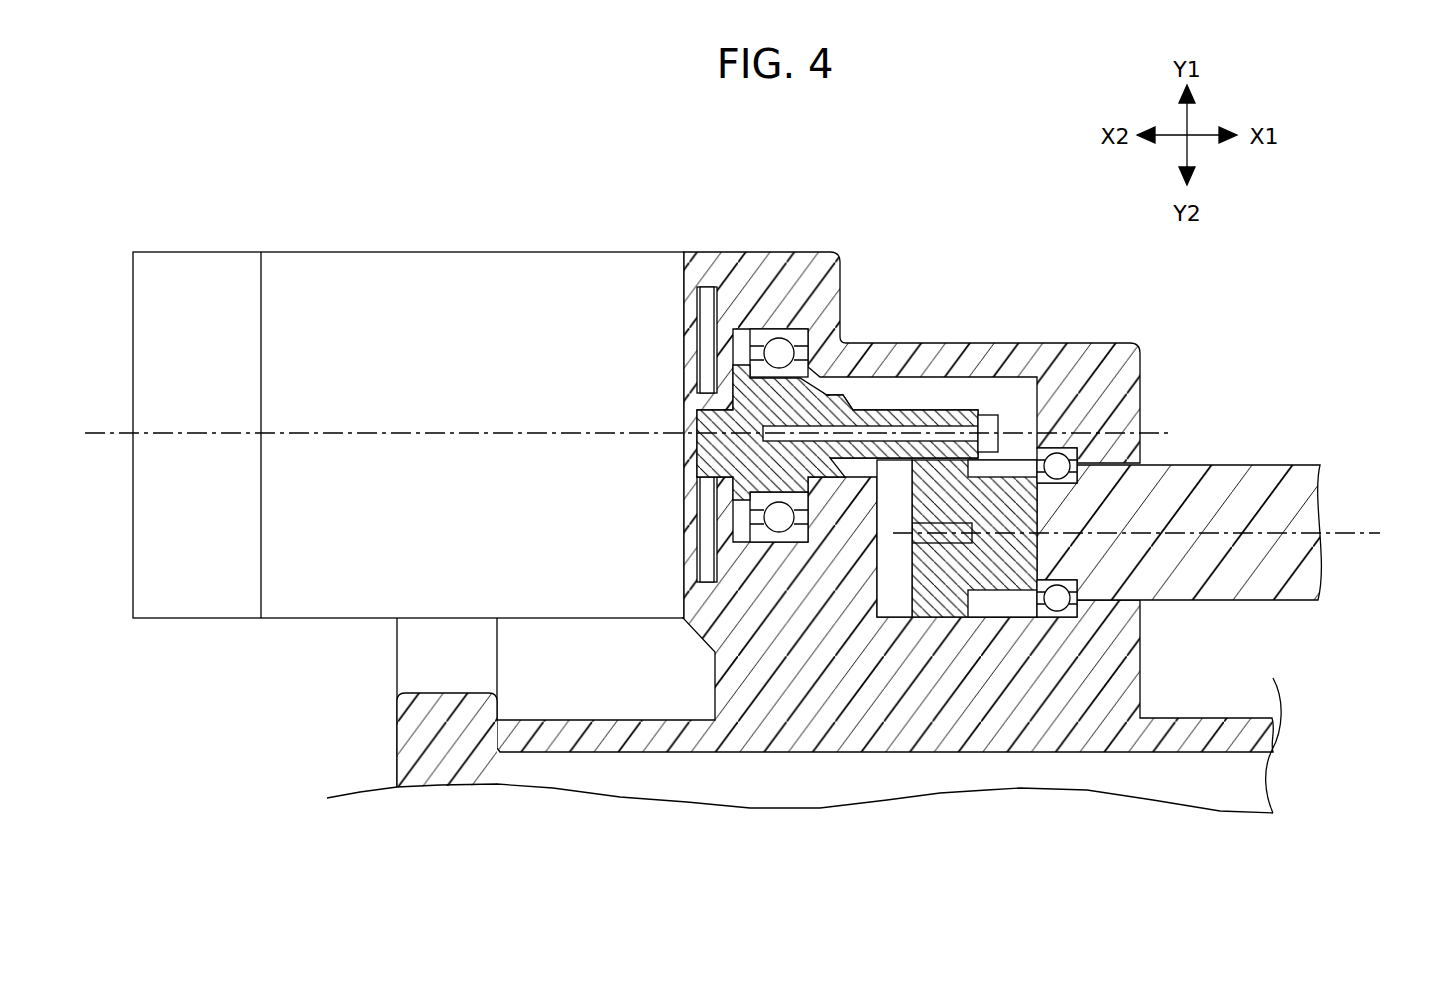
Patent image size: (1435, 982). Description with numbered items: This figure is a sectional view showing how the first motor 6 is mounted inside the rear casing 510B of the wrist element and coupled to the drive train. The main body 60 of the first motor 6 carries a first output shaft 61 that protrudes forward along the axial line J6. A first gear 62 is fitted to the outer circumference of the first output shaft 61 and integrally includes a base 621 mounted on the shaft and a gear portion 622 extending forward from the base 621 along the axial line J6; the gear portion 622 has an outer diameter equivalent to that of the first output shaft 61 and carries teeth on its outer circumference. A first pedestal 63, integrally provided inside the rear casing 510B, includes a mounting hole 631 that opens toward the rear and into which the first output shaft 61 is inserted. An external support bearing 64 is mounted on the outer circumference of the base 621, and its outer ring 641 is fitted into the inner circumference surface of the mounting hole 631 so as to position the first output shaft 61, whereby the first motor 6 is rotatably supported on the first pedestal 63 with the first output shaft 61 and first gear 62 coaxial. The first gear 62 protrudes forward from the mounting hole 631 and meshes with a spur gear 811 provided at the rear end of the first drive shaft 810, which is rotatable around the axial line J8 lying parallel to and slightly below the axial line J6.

The first motor 6 is at (473, 220).
The main body 60 is at (370, 252).
The first output shaft 61 is at (725, 412).
The first gear 62 is at (1007, 259).
The base 621 is at (836, 394).
The gear portion 622 is at (922, 415).
The first pedestal 63 is at (809, 251).
The mounting hole 631 is at (740, 520).
The external support bearing 64 is at (821, 344).
The outer ring 641 is at (768, 328).
The first drive shaft 810 is at (1261, 465).
The spur gear 811 is at (893, 619).
The rear casing 510B is at (657, 752).
The axial line J6 is at (609, 435).
The axial line J8 is at (1154, 534).